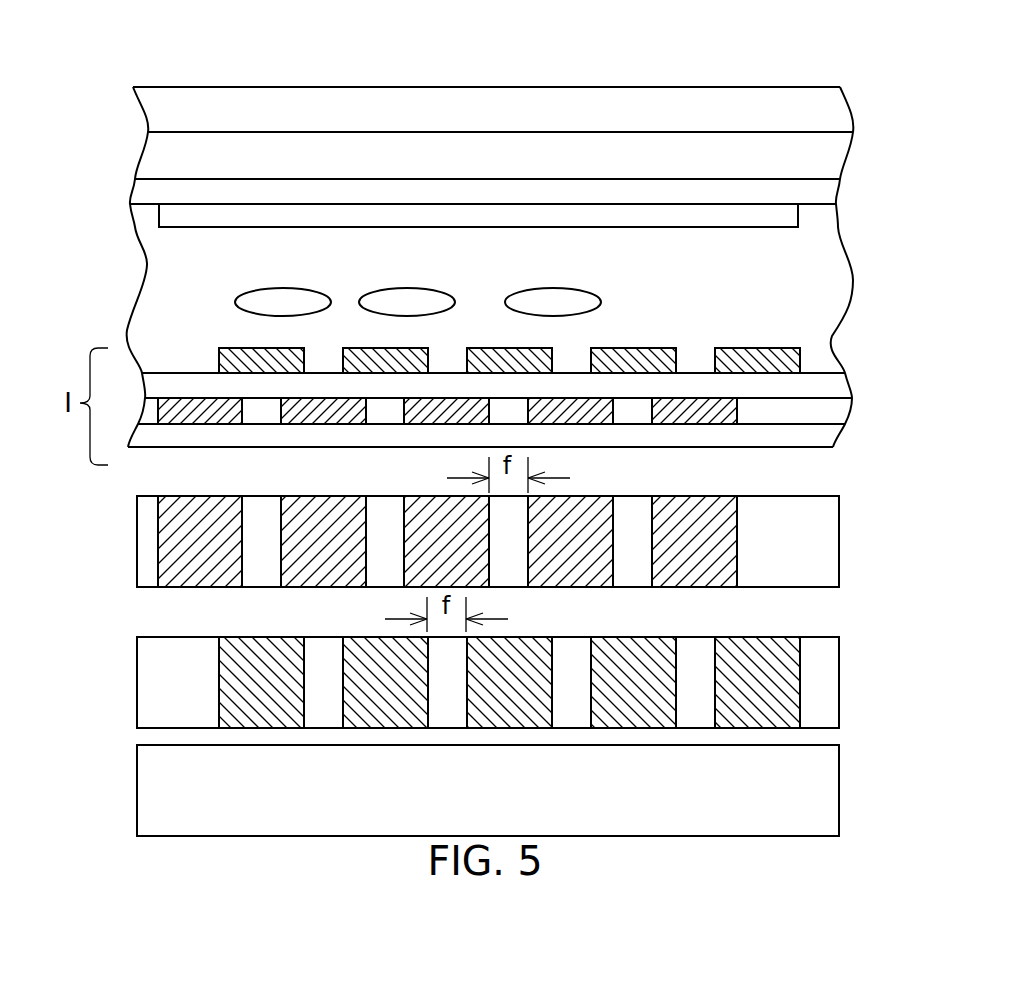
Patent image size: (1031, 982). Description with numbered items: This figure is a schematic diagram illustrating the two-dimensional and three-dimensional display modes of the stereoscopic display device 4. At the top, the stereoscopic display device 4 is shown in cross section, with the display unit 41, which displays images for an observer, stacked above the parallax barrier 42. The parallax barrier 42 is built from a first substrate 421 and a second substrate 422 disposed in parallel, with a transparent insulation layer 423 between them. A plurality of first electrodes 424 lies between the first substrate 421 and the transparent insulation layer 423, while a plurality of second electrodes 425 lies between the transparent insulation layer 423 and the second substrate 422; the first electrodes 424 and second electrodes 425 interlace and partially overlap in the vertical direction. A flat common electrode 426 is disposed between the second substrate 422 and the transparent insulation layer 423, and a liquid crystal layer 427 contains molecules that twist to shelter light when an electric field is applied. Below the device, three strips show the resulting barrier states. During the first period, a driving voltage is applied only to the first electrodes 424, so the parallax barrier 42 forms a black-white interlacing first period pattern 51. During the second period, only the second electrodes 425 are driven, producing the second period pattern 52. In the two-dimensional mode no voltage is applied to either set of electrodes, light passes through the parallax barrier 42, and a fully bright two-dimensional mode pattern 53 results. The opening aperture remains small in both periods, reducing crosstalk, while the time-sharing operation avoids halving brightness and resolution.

The stereoscopic display device 4 is at (876, 78).
The display unit 41 is at (512, 121).
The parallax barrier 42 is at (943, 455).
The first substrate 421 is at (828, 438).
The second substrate 422 is at (828, 190).
The transparent insulation layer 423 is at (832, 387).
The first electrodes 424 is at (192, 415).
The second electrodes 425 is at (262, 363).
The common electrode 426 is at (790, 215).
The liquid crystal layer 427 is at (830, 295).
The first period pattern 51 is at (825, 538).
The second period pattern 52 is at (825, 678).
The 2D mode pattern 53 is at (825, 792).